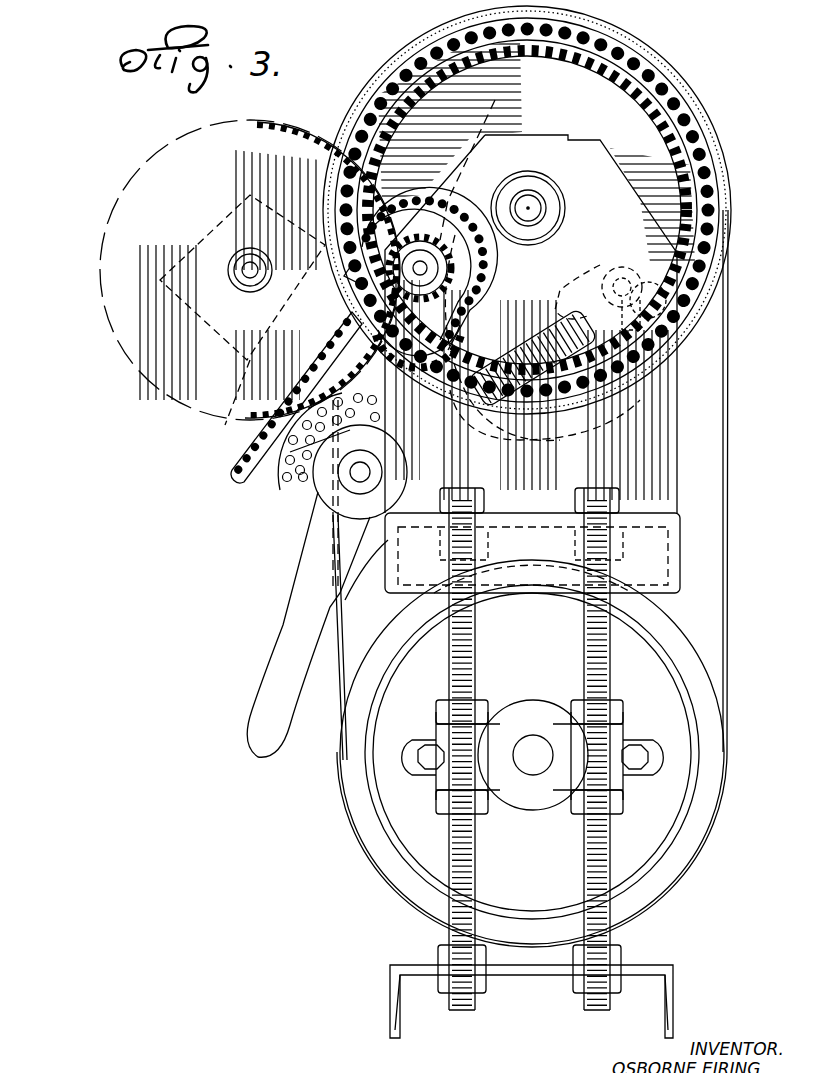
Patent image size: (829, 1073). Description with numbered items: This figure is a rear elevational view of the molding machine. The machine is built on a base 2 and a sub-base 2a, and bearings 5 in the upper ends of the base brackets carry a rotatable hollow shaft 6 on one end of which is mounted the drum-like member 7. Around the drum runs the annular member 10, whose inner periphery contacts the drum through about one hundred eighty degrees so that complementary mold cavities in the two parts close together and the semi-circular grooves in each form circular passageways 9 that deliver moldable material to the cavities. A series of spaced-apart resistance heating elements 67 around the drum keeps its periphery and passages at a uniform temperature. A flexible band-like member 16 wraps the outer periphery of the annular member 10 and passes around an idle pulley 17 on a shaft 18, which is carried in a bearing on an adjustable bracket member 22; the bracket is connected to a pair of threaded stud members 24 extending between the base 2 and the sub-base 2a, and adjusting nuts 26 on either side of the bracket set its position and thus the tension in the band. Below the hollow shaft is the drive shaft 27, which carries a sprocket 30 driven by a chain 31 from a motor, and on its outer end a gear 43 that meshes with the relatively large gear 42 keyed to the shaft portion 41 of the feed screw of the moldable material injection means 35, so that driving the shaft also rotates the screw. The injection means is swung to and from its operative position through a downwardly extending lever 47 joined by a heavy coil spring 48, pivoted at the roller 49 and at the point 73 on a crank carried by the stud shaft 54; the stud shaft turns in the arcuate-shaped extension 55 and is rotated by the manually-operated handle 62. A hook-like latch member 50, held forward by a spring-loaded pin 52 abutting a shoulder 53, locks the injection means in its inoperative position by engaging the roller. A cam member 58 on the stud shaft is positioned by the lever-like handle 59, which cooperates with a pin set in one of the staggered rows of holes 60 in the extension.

The base 2 is at (655, 562).
The sub-base 2a is at (397, 990).
The bearings 5 is at (556, 222).
The rotatable hollow shaft 6 is at (536, 206).
The drum-like member 7 is at (655, 160).
The circular passageways 9 is at (650, 62).
The annular member 10 is at (728, 285).
The flexible band-like member 16 is at (730, 672).
The idle pulley 17 is at (658, 832).
The shaft 18 is at (541, 766).
The adjustable bracket member 22 is at (455, 765).
The threaded stud members 24 is at (575, 1005).
The adjusting nut 26 is at (572, 702).
The drive shaft 27 is at (422, 266).
The sprocket 30 is at (478, 314).
The chain 31 is at (488, 275).
The moldable material injection means 35 is at (198, 227).
The shaft portion 41 is at (268, 258).
The gear 42 is at (298, 124).
The gear 43 is at (425, 258).
The lever 47 is at (570, 290).
The coil spring 48 is at (608, 266).
The roller 49 is at (545, 427).
The hook-like latch member 50 is at (625, 385).
The pin 52 is at (640, 322).
The shoulder 53 is at (648, 282).
The stud shaft 54 is at (365, 470).
The arcuate-shaped extension 55 is at (291, 518).
The cam member 58 is at (312, 470).
The lever-like handle member 59 is at (300, 603).
The holes 60 is at (290, 462).
The manually-operated lever-like handle member 62 is at (497, 99).
The resistance heating elements 67 is at (685, 116).
The pivotal attachment 73 is at (480, 440).